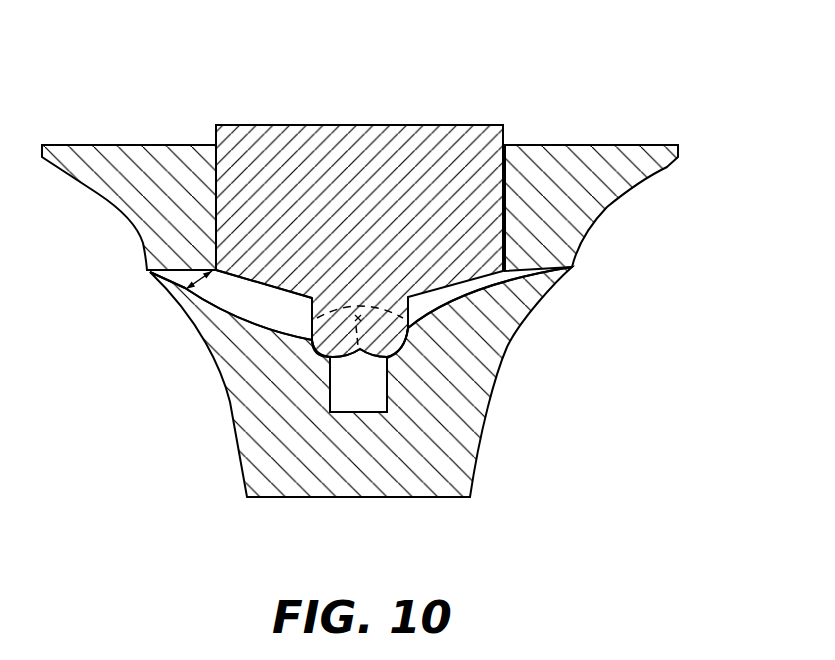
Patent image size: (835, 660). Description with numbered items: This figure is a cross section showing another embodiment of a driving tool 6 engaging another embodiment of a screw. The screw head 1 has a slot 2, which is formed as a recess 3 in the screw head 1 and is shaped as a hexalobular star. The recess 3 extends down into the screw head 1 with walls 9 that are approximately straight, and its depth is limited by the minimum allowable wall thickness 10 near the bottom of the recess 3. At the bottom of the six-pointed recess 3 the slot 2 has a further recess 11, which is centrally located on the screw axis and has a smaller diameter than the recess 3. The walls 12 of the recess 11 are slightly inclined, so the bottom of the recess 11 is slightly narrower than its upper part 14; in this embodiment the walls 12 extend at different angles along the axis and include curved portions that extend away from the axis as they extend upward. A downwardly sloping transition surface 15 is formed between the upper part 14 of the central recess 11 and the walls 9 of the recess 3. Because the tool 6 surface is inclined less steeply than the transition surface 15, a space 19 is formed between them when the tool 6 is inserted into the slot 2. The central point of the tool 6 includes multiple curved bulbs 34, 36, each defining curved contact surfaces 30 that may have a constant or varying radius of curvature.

The screw head 1 is at (560, 218).
The slot 2 is at (507, 143).
The recess 3 is at (196, 211).
The tool 6 is at (437, 158).
The walls 9 is at (507, 208).
The minimum allowable wall thickness 10 is at (185, 287).
The further recess 11 is at (390, 363).
The walls 12 is at (410, 335).
The upper part 14 is at (312, 338).
The transition surface 15 is at (300, 335).
The space 19 is at (440, 293).
The contact surface 30 is at (325, 372).
The curved bulb 34 is at (390, 413).
The curved bulb 36 is at (328, 388).